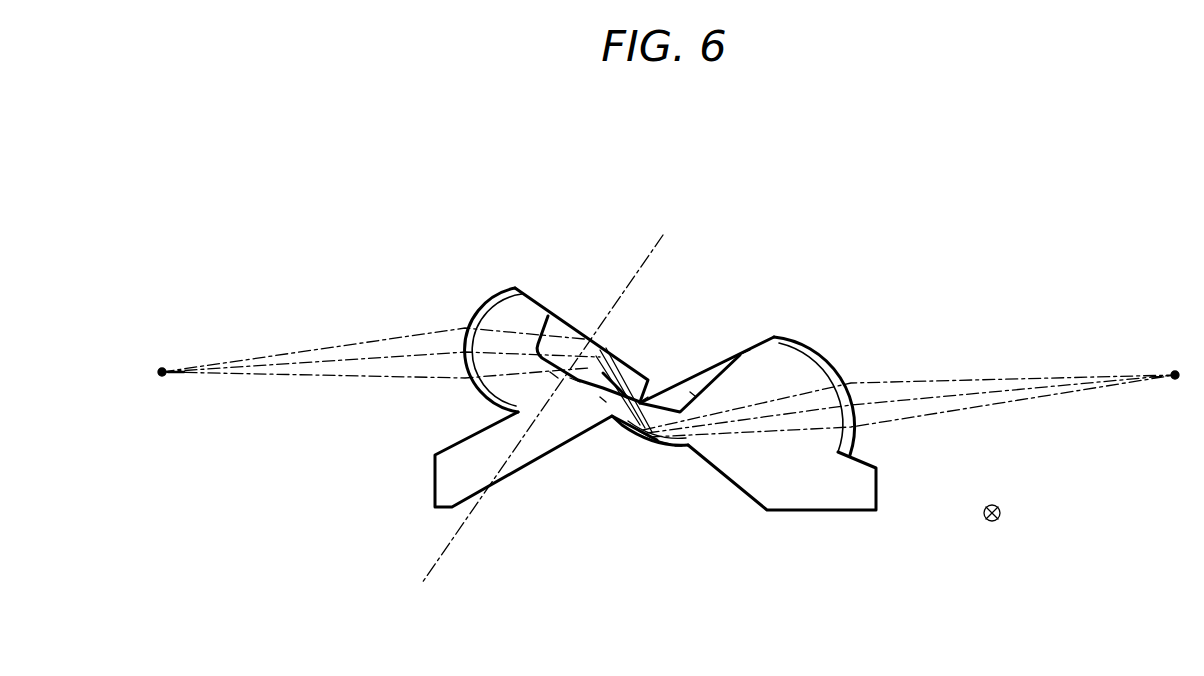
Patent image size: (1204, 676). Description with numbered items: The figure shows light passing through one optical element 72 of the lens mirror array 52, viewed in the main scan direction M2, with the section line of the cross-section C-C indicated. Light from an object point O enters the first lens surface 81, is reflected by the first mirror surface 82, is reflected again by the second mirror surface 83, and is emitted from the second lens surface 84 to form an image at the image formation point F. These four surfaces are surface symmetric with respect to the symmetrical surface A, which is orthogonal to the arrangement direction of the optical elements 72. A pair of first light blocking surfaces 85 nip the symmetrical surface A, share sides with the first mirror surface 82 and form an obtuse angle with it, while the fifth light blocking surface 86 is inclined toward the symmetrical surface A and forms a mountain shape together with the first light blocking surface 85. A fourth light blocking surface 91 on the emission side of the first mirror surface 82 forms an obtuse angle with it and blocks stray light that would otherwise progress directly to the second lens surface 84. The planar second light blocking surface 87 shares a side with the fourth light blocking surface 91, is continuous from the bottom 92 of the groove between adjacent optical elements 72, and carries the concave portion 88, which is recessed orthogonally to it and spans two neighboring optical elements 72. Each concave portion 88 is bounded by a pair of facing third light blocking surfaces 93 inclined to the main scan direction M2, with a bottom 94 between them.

The lens mirror array 52 is at (640, 220).
The optical element 72 is at (747, 273).
The first lens surface 81 is at (493, 304).
The first mirror surface 82 is at (605, 353).
The second mirror surface 83 is at (640, 440).
The second lens surface 84 is at (798, 348).
The first light blocking surface 85 is at (571, 383).
The fifth light blocking surface 86 is at (603, 398).
The second light blocking surface 87 is at (718, 362).
The concave portion 88 is at (683, 390).
The fourth light blocking surface 91 is at (648, 397).
The bottom of the groove 92 is at (554, 378).
The third light blocking surface 93 is at (690, 390).
The bottom 94 is at (677, 455).
The symmetrical surface A is at (308, 350).
The cross-section C- C is at (645, 255).
The object point O is at (162, 367).
The image formation point F is at (1175, 370).
The main scan direction M2 is at (993, 504).